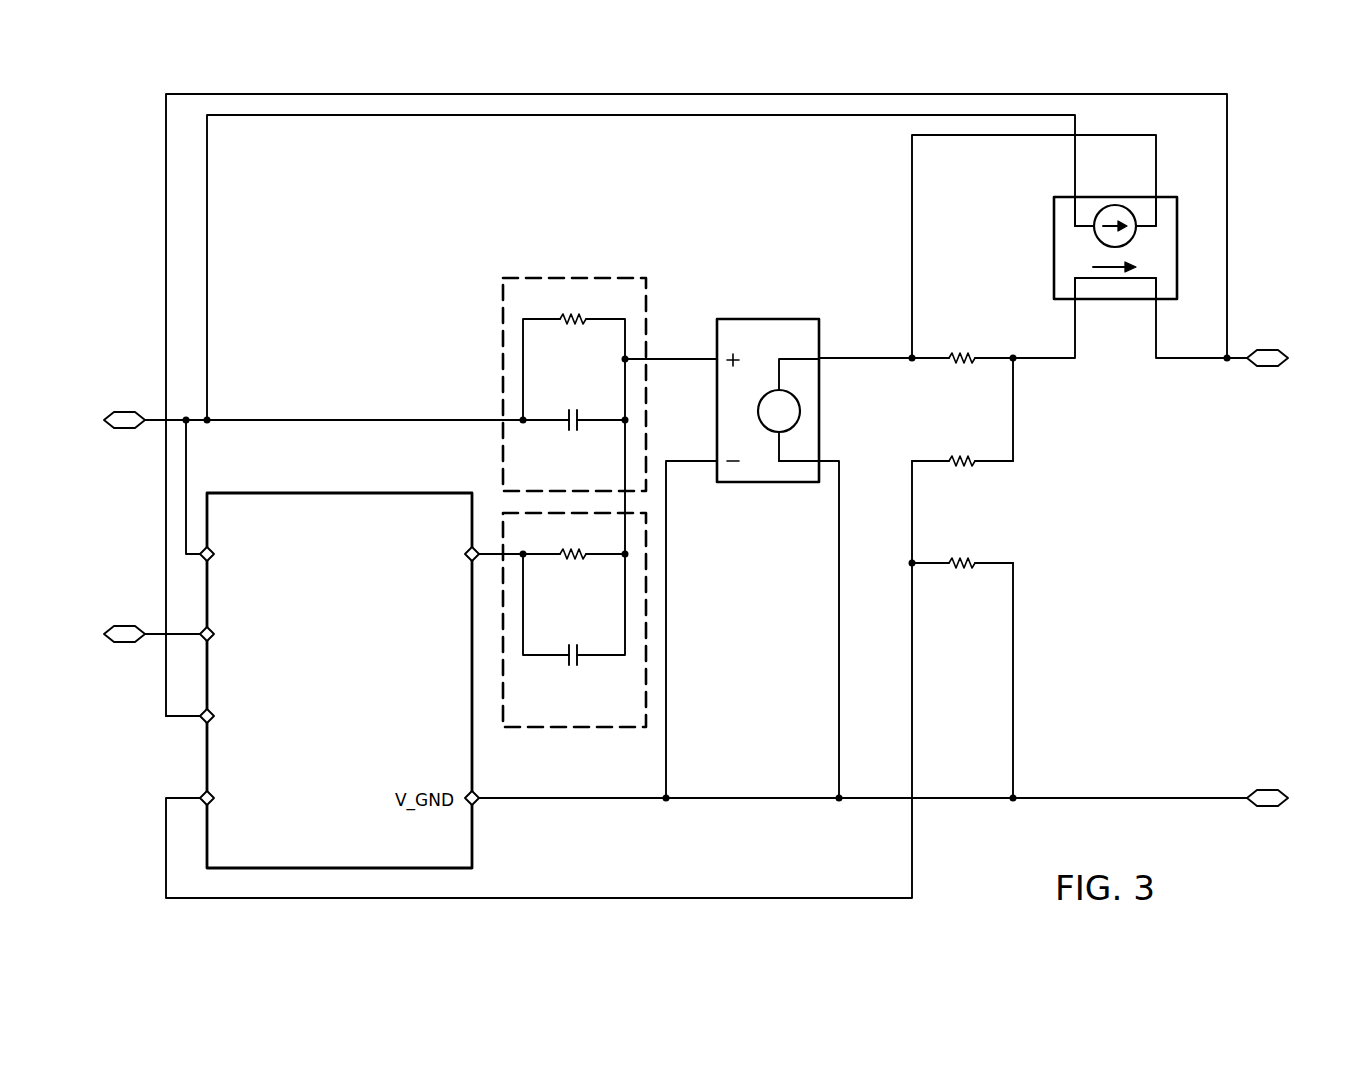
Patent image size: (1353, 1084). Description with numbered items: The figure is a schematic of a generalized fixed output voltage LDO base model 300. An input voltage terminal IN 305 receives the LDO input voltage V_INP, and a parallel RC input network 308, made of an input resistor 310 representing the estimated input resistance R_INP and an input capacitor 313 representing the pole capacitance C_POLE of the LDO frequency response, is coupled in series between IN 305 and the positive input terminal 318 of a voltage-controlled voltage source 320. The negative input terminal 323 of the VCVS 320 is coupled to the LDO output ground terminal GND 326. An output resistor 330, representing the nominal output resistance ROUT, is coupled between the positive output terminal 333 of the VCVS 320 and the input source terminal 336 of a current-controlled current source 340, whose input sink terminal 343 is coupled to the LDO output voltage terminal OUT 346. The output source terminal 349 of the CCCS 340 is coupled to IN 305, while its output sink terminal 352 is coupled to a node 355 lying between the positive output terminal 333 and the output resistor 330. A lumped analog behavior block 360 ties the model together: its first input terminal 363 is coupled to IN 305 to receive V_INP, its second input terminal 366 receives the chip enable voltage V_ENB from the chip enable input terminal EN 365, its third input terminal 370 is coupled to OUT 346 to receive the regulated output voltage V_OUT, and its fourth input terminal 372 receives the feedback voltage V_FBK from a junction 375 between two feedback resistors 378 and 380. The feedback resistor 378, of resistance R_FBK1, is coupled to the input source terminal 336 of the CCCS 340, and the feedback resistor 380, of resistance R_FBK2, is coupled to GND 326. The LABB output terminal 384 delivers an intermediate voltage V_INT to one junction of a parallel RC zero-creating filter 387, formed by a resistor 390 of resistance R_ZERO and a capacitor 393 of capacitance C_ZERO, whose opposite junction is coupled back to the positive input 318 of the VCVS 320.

The LDO base model 300 is at (110, 171).
The input voltage terminal 305 is at (122, 411).
The parallel RC input network 308 is at (555, 270).
The input resistor 310 is at (573, 327).
The input capacitor 313 is at (571, 434).
The positive input terminal 318 is at (716, 358).
The voltage-controlled voltage source 320 is at (765, 318).
The inverting input of buffer 323 is at (716, 460).
The LDO output ground terminal 326 is at (1267, 807).
The output resistor 330 is at (958, 368).
The positive output terminal 333 is at (822, 358).
The input source terminal 336 is at (1070, 303).
The current-controlled current source 340 is at (1052, 247).
The input sink terminal 343 is at (1160, 303).
The LDO output voltage terminal 346 is at (1267, 348).
The output source terminal 349 is at (1069, 193).
The output sink terminal 352 is at (1160, 193).
The node 355 is at (908, 366).
The lumped analog behavior block 360 is at (369, 743).
The first input terminal 363 is at (213, 564).
The LDO chip enable input terminal 365 is at (124, 644).
The second input terminal 366 is at (213, 644).
The third LABB input terminal 370 is at (213, 726).
The fourth LABB input terminal 372 is at (213, 808).
The junction 375 is at (906, 566).
The feedback resistor 378 is at (960, 470).
The feedback resistor 380 is at (960, 572).
The output terminal 384 is at (466, 564).
The parallel RC zero-creating filter 387 is at (555, 738).
The resistor 390 is at (573, 561).
The capacitor 393 is at (571, 668).